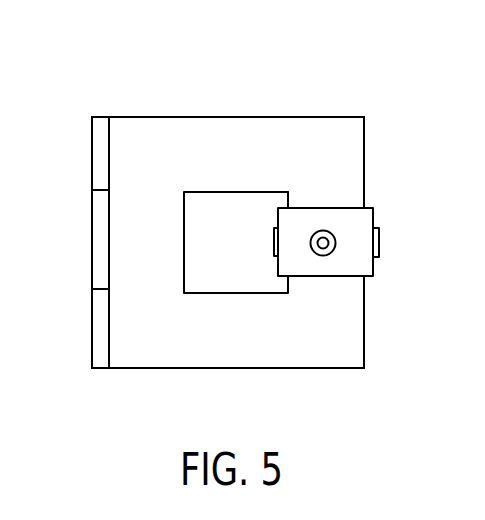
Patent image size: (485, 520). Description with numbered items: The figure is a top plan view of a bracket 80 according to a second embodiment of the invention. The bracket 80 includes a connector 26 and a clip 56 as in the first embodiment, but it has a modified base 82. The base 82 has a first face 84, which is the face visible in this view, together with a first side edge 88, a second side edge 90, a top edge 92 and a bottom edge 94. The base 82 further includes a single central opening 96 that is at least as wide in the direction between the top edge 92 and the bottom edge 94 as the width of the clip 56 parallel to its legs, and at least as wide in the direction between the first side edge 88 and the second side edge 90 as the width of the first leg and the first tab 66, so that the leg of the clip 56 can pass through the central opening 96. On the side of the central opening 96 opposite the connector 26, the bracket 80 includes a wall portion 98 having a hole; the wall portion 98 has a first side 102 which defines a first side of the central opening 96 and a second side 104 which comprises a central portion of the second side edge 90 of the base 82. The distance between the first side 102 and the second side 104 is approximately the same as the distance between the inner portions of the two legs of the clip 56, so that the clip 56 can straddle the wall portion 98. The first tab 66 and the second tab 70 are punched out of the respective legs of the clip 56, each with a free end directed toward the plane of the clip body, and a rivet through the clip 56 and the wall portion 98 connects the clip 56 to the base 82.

The bracket 80 is at (224, 70).
The connector 26 is at (92, 275).
The top edge 92 is at (142, 117).
The first face 84 is at (318, 130).
The second side edge 90 is at (364, 340).
The bottom edge 94 is at (310, 368).
The first side edge 88 is at (109, 337).
The base 82 is at (159, 357).
The wall portion 98 is at (338, 297).
The central opening 96 is at (230, 207).
The first side 102 is at (287, 200).
The second side 104 is at (367, 203).
The clip 56 is at (350, 225).
The second tab 70 is at (380, 243).
The first tab 66 is at (275, 245).